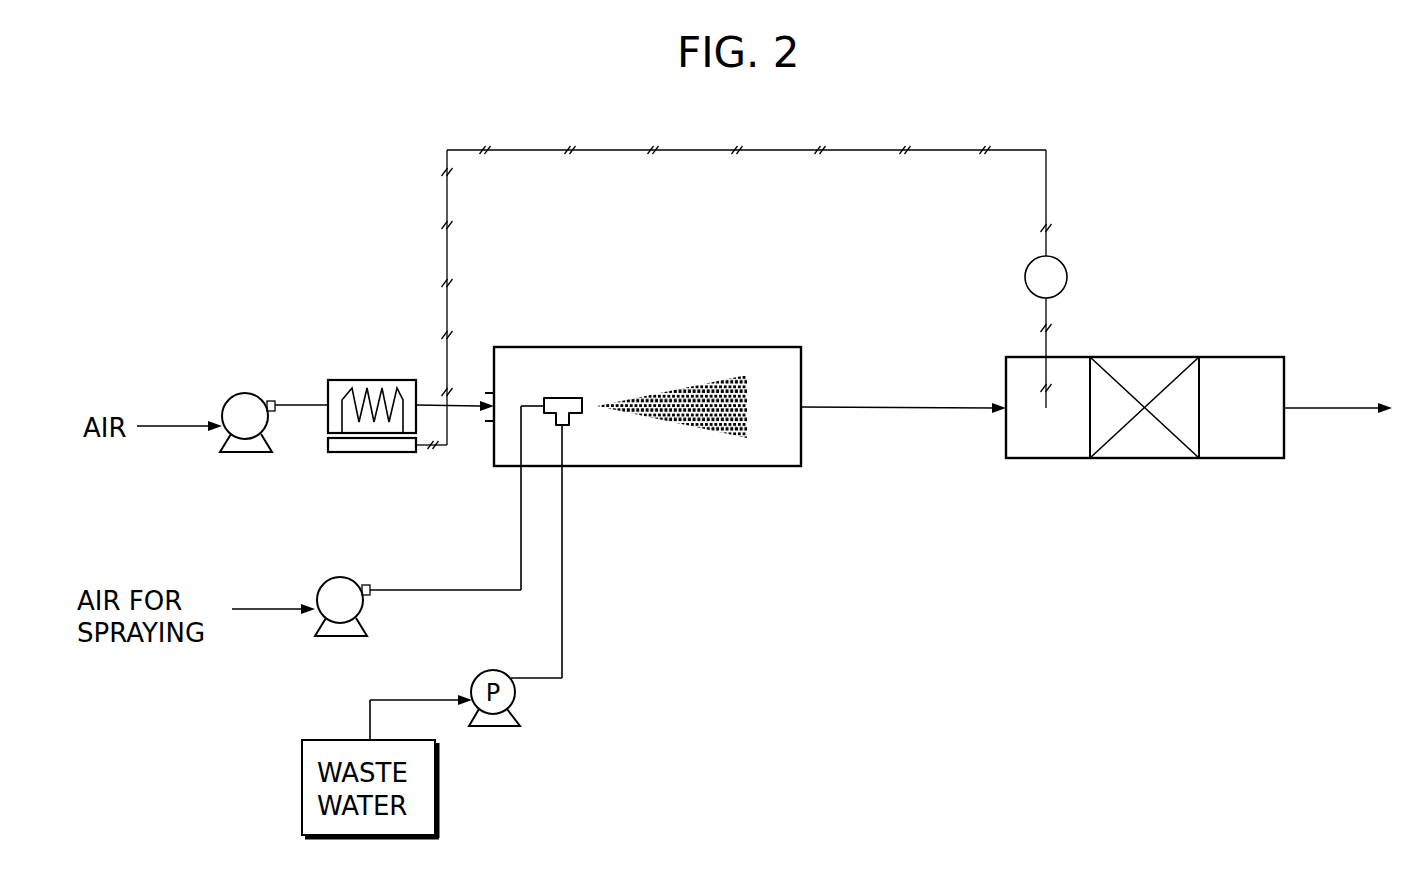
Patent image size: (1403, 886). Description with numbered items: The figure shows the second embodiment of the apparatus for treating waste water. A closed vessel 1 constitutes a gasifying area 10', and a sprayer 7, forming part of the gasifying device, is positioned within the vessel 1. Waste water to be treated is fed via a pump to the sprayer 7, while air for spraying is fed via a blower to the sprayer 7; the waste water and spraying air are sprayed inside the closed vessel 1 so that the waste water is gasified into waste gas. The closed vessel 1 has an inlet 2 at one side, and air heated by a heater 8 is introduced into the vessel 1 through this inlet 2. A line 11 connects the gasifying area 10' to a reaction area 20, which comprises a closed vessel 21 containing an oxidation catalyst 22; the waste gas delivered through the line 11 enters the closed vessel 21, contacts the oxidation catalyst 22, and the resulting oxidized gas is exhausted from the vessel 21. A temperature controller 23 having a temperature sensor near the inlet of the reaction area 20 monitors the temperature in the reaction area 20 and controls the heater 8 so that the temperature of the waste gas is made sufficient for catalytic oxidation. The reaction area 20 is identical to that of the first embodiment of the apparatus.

The closed vessel 1 is at (757, 470).
The inlet 2 is at (489, 390).
The sprayer 7 is at (560, 398).
The heater 8 is at (370, 380).
The gasifying area 10' is at (679, 259).
The line 11 is at (882, 405).
The reaction area 20 is at (1199, 377).
The closed vessel 21 is at (1285, 437).
The oxidation catalyst 22 is at (1135, 460).
The temperature controller 23 is at (1025, 280).